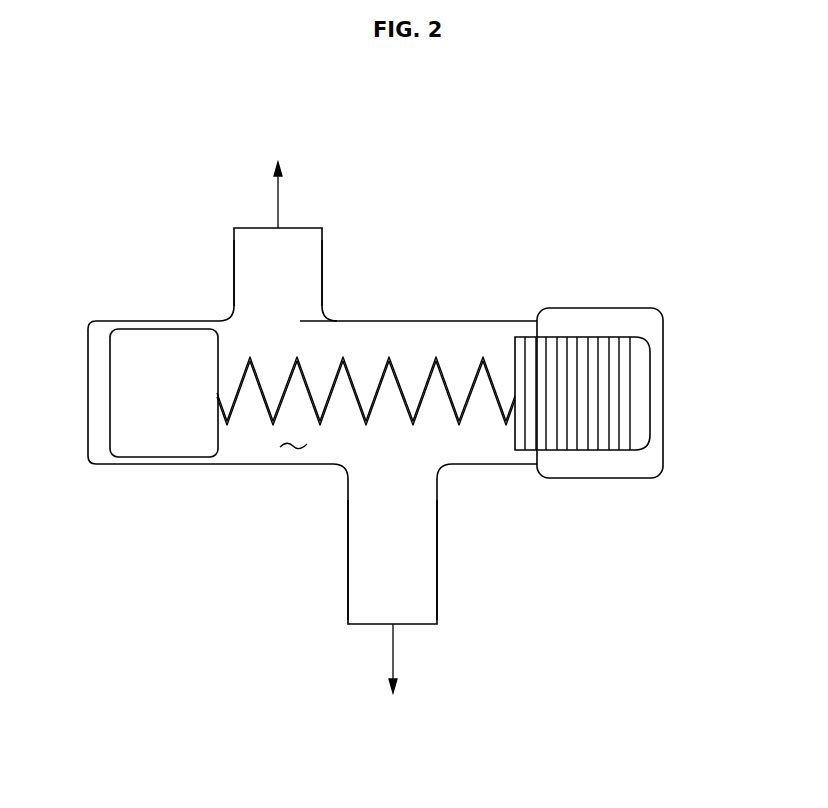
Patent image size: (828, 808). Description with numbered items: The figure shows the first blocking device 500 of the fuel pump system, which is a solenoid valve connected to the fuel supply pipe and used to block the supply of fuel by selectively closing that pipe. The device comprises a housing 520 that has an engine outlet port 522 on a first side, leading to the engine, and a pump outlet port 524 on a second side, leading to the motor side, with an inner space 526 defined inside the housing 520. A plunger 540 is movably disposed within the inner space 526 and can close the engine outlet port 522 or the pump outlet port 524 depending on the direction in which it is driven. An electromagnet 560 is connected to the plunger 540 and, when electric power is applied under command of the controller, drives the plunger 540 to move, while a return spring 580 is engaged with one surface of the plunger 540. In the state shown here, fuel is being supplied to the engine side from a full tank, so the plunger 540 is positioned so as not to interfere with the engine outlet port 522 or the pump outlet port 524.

The first blocking device 500 is at (493, 263).
The housing 520 is at (407, 330).
The engine outlet port 522 is at (250, 261).
The pump outlet port 524 is at (422, 595).
The inner space 526 is at (293, 448).
The plunger 540 is at (155, 342).
The electromagnet 560 is at (580, 348).
The return spring 580 is at (459, 423).